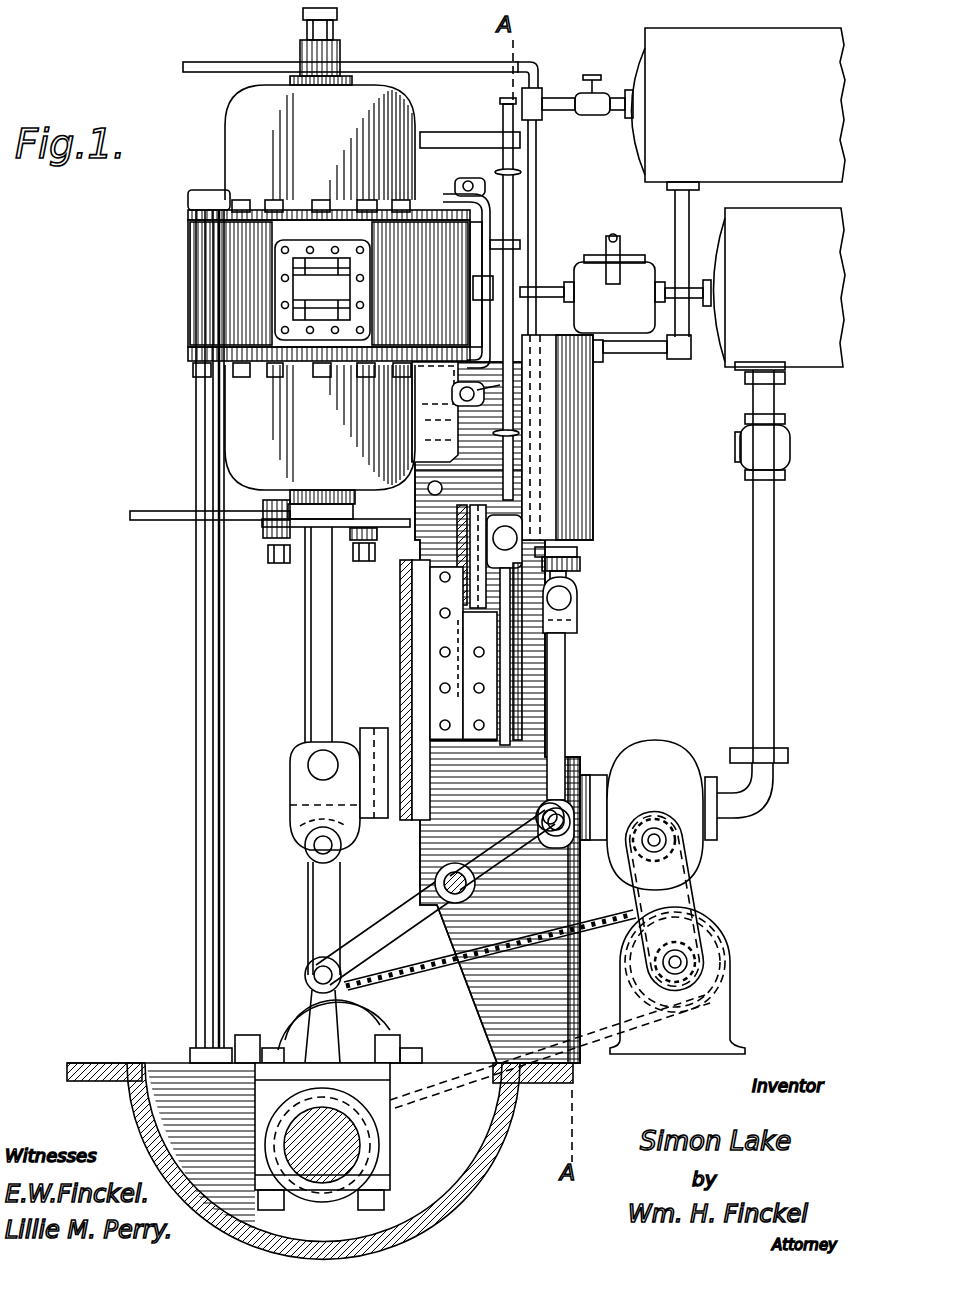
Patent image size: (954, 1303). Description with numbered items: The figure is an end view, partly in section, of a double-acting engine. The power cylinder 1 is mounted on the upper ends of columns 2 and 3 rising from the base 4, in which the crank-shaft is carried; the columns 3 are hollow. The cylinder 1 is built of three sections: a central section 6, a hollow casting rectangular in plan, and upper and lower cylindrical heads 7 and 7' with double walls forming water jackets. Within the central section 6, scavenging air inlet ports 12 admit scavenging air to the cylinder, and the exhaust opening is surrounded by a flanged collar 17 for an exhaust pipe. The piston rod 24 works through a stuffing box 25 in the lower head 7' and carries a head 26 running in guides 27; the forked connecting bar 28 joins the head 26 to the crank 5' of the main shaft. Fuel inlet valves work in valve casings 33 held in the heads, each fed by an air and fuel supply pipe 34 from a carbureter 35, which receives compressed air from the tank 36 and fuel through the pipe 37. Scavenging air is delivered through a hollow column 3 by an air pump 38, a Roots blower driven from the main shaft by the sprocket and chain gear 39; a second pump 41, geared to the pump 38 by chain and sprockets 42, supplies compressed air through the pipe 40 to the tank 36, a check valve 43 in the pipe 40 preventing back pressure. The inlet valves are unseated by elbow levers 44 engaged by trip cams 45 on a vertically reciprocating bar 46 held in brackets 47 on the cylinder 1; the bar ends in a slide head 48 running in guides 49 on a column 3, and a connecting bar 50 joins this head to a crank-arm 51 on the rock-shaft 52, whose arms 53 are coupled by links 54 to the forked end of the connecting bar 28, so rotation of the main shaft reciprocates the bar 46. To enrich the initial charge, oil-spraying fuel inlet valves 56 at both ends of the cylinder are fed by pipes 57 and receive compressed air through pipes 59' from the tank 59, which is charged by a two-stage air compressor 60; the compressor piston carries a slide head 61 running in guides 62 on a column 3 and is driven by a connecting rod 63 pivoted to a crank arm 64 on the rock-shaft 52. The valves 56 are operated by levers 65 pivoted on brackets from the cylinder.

The power cylinder 1 is at (184, 191).
The column 2 is at (230, 608).
The hollow column 3 is at (420, 545).
The base 4 is at (145, 1122).
The crank 5' is at (331, 1100).
The central section 6 is at (187, 291).
The upper cylindrical section 7 is at (320, 144).
The lower cylindrical section 7' is at (320, 434).
The scavenging air inlet ports 12 is at (345, 312).
The flanged collar 17 is at (275, 318).
The piston rod 24 is at (305, 640).
The stuffing box 25 is at (314, 512).
The head 26 is at (297, 733).
The guides 27 is at (398, 640).
The connecting bar 28 is at (300, 842).
The valve casings 33 is at (475, 198).
The air and fuel supply pipe 34 is at (537, 218).
The carbureter 35 is at (615, 294).
The compressed air supply tank 36 is at (780, 289).
The pipe 37 is at (615, 238).
The air pump 38 is at (677, 980).
The sprocket and chain gear 39 is at (440, 990).
The pipe 40 is at (776, 602).
The pump 41 is at (641, 815).
The chain and sprockets 42 is at (700, 887).
The check valve 43 is at (786, 443).
The elbow levers 44 is at (500, 190).
The trip cams 45 is at (520, 172).
The vertically reciprocating bar 46 is at (560, 368).
The brackets 47 is at (450, 142).
The slide head 48 is at (520, 525).
The guides 49 is at (488, 512).
The connecting bar 50 is at (505, 665).
The crank-arm 51 is at (478, 865).
The rock-shaft 52 is at (437, 888).
The arms 53 is at (389, 929).
The links 54 is at (312, 930).
The fuel inlet valves 56 is at (320, 32).
The pipes 57 is at (232, 70).
The compressed air supply tank 59 is at (691, 180).
The pipes 59' is at (341, 289).
The air compressor 60 is at (593, 396).
The slide head 61 is at (578, 580).
The guides 62 is at (570, 612).
The connecting rod 63 is at (567, 702).
The crank arm 64 is at (560, 860).
The levers 65 is at (337, 21).